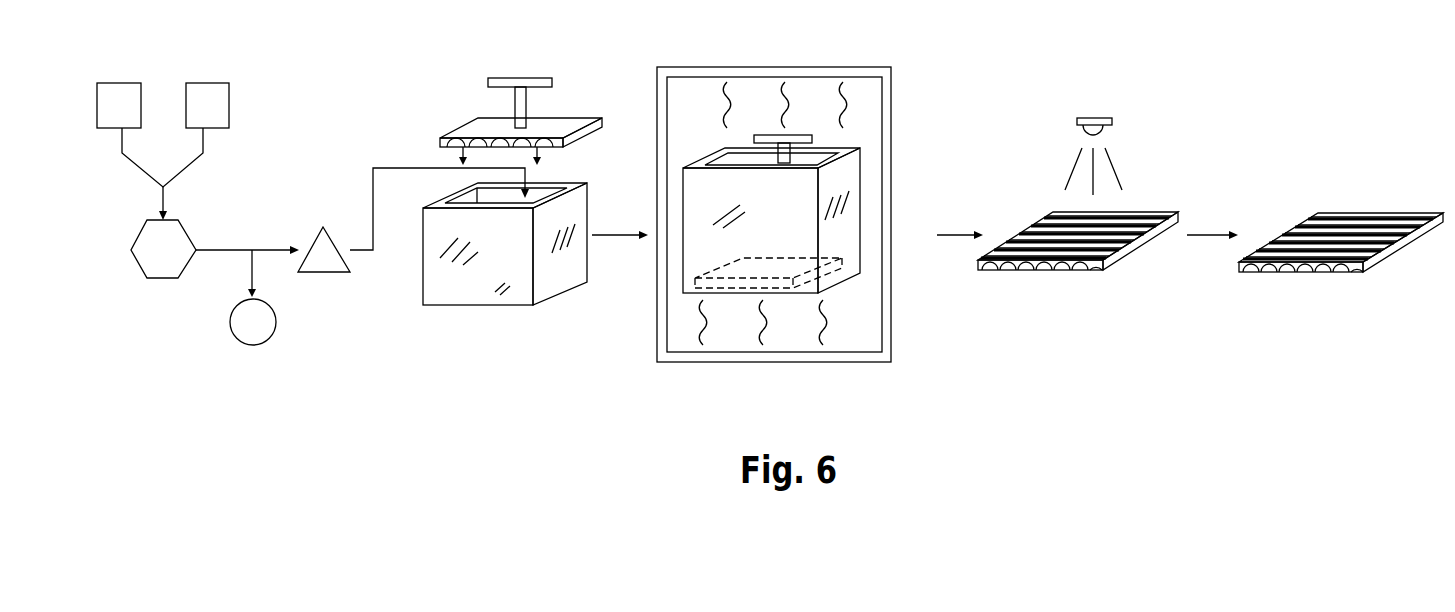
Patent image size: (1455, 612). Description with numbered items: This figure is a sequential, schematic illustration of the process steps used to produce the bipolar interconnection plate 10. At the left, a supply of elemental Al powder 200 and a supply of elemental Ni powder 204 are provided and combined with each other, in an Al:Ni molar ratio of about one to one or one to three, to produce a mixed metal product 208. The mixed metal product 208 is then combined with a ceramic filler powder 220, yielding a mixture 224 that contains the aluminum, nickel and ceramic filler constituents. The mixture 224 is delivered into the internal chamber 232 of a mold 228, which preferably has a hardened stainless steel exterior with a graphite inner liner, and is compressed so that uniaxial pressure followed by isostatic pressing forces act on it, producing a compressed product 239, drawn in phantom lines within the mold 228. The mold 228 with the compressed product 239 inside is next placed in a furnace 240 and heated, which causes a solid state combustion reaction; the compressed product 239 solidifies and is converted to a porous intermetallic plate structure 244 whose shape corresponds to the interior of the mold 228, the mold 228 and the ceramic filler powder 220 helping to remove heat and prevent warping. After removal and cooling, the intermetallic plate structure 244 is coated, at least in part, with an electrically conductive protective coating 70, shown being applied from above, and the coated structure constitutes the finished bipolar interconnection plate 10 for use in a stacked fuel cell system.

The elemental Al powder 200 is at (115, 90).
The elemental Ni powder 204 is at (207, 90).
The mixed metal product 208 is at (145, 257).
The ceramic filler powder 220 is at (240, 322).
The mixture 224 is at (323, 265).
The internal chamber 232 is at (470, 203).
The mold 228 is at (602, 118).
The furnace 240 is at (853, 67).
The compressed product 239 is at (837, 272).
The protective coating 70 is at (1110, 162).
The intermetallic plate structure 244 is at (1102, 270).
The bipolar interconnection plate 10 is at (1365, 268).